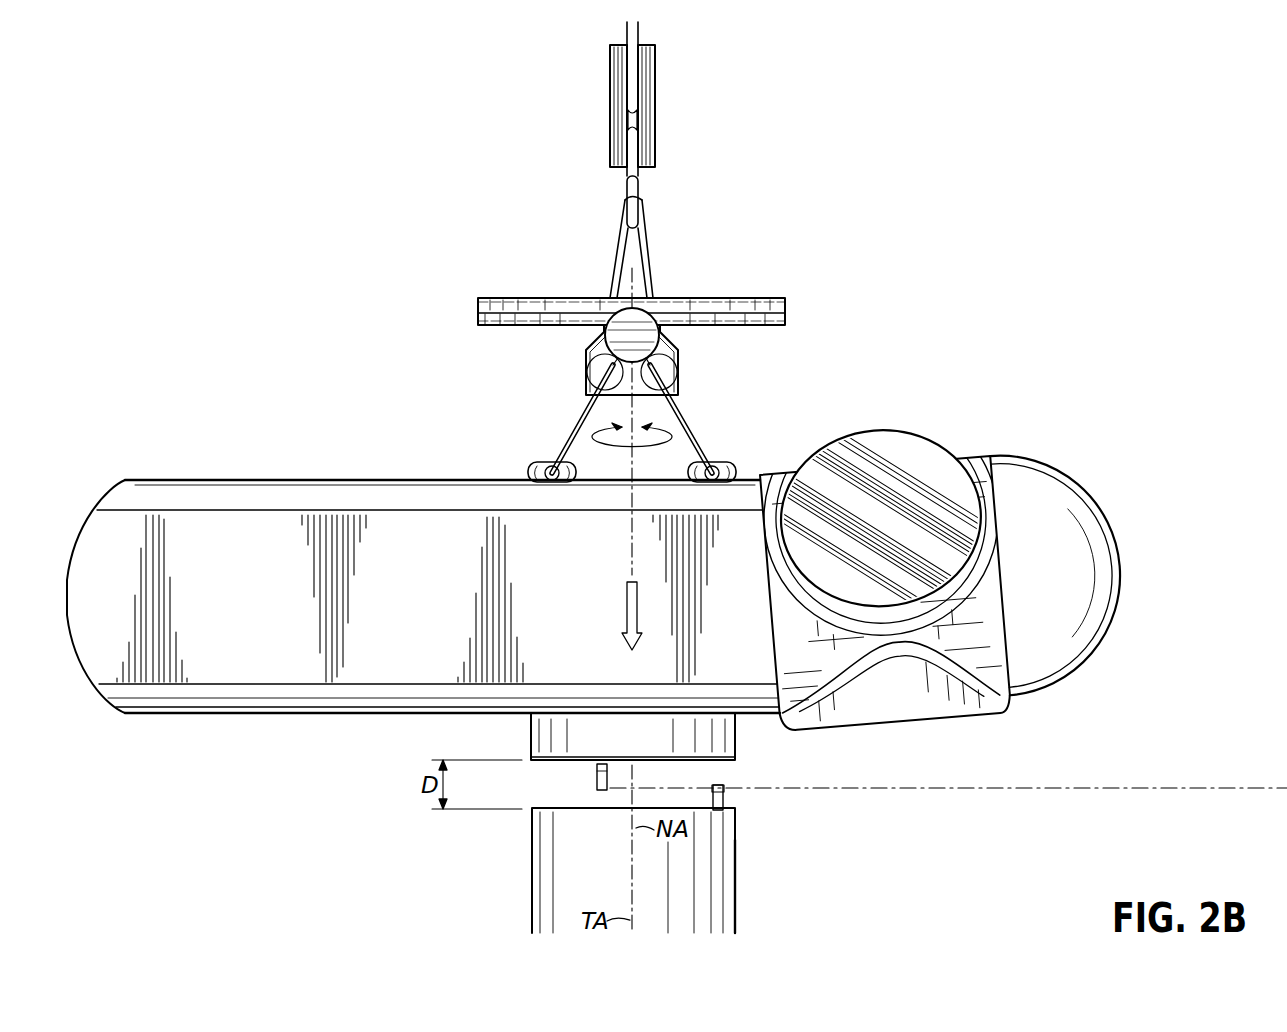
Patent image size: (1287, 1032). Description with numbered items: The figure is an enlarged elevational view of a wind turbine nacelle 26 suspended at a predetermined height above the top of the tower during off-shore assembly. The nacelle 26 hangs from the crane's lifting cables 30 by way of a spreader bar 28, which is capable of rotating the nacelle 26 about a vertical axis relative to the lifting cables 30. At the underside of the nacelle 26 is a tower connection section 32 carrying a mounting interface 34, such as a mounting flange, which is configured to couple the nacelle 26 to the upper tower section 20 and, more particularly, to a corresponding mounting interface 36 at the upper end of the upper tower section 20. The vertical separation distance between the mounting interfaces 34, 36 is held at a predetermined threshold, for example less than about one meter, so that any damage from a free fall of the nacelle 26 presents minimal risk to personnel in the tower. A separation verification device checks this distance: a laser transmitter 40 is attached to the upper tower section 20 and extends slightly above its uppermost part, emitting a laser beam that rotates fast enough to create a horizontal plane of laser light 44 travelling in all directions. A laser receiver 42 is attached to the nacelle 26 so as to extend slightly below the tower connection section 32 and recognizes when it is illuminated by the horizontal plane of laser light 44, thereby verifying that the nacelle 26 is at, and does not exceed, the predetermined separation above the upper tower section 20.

The upper tower section 20 is at (737, 866).
The nacelle 26 is at (941, 420).
The spreader bar 28 is at (767, 298).
The lifting cables 30 is at (641, 26).
The tower connection section 32 is at (531, 736).
The mounting interface 34 is at (735, 758).
The mounting interface 36 is at (542, 808).
The laser transmitter 40 is at (725, 792).
The laser receiver 42 is at (596, 777).
The horizontal plane of laser light 44 is at (1128, 787).